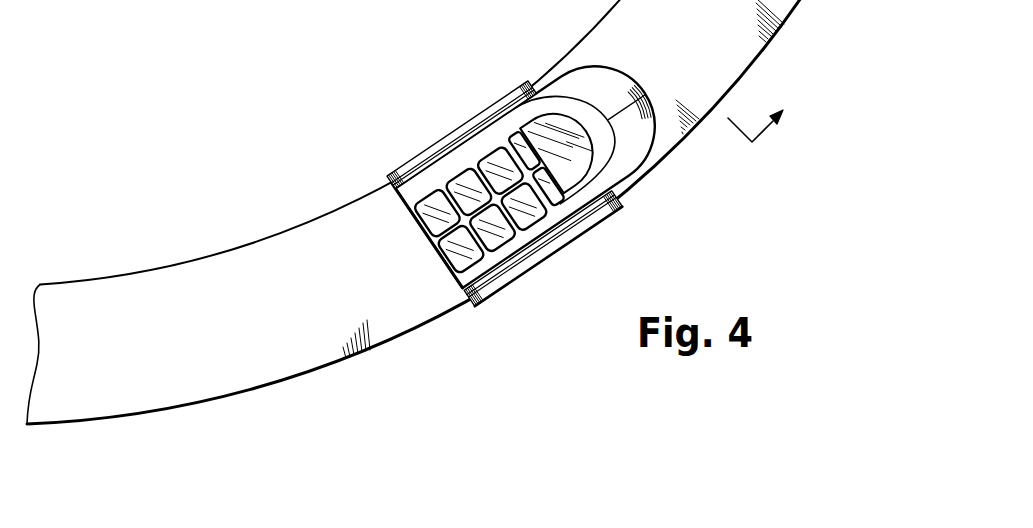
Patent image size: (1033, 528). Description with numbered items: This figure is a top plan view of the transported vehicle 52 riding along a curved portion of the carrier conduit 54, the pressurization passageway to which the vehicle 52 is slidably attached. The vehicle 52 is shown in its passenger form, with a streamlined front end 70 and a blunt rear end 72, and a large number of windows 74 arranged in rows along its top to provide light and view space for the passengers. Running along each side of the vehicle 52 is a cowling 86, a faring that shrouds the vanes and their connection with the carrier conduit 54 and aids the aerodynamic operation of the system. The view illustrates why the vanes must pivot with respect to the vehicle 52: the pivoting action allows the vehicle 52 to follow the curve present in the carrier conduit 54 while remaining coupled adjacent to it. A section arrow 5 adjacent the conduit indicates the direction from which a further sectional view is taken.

The section line for FIG. 5 is at (766, 113).
The vehicle 52 is at (518, 214).
The carrier conduit 54 is at (298, 321).
The streamlined front end 70 is at (652, 161).
The blunt rear end 72 is at (415, 228).
The windows 74 is at (465, 185).
The cowling 86 is at (511, 106).